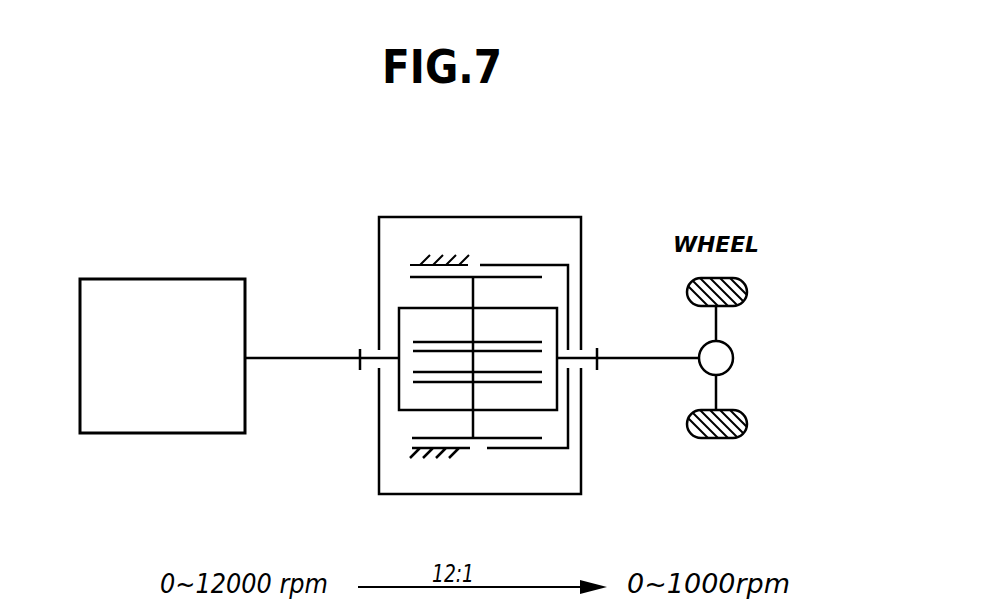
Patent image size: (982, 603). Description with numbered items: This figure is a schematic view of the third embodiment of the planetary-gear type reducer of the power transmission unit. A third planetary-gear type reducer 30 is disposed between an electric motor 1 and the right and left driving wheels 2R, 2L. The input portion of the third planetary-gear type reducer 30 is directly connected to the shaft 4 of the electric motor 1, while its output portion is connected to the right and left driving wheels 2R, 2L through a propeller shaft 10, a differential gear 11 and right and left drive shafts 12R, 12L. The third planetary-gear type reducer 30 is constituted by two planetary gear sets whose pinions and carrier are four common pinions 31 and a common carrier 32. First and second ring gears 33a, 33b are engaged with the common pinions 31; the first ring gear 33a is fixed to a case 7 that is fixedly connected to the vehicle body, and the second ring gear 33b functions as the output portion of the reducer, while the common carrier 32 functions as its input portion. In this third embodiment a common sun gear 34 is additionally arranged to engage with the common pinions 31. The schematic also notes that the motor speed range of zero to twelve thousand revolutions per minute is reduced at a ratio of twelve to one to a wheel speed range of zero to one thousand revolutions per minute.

The electric motor 1 is at (221, 278).
The shaft 4 is at (298, 357).
The case 7 is at (436, 262).
The third planetary-gear type reducer 30 is at (496, 215).
The common pinions 31 is at (472, 290).
The common carrier 32 is at (410, 412).
The first ring gear 33a is at (433, 448).
The second ring gear 33b is at (542, 263).
The common sun gear 34 is at (522, 377).
The propeller shaft 10 is at (642, 363).
The differential gear 11 is at (733, 359).
The right drive shaft 12R is at (718, 320).
The left drive shaft 12L is at (718, 393).
The right driving wheel 2R is at (745, 282).
The left driving wheel 2L is at (744, 430).